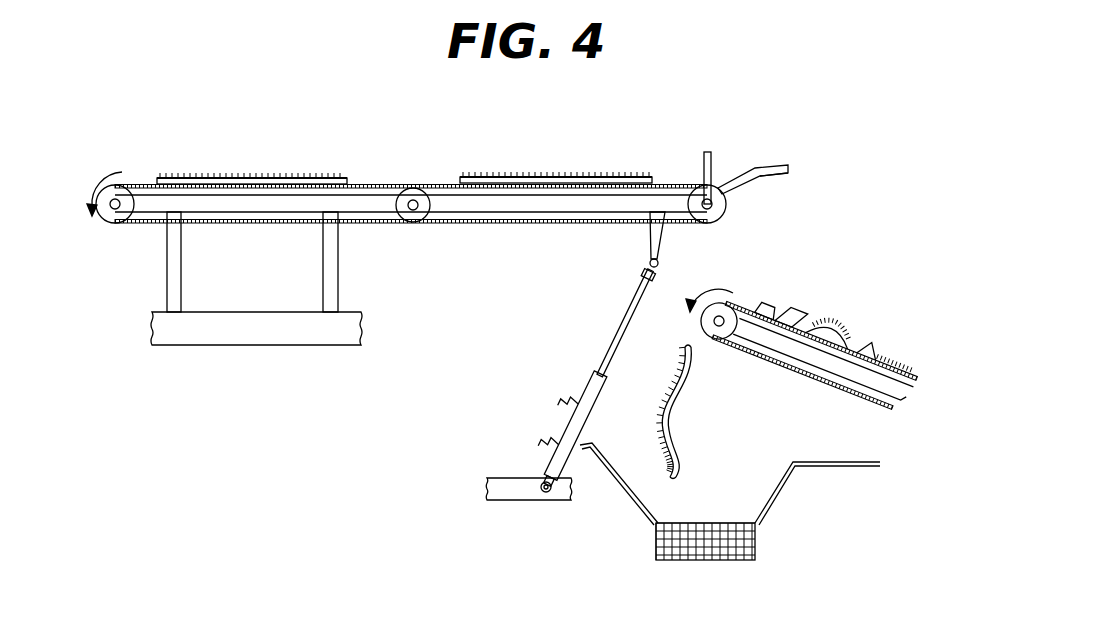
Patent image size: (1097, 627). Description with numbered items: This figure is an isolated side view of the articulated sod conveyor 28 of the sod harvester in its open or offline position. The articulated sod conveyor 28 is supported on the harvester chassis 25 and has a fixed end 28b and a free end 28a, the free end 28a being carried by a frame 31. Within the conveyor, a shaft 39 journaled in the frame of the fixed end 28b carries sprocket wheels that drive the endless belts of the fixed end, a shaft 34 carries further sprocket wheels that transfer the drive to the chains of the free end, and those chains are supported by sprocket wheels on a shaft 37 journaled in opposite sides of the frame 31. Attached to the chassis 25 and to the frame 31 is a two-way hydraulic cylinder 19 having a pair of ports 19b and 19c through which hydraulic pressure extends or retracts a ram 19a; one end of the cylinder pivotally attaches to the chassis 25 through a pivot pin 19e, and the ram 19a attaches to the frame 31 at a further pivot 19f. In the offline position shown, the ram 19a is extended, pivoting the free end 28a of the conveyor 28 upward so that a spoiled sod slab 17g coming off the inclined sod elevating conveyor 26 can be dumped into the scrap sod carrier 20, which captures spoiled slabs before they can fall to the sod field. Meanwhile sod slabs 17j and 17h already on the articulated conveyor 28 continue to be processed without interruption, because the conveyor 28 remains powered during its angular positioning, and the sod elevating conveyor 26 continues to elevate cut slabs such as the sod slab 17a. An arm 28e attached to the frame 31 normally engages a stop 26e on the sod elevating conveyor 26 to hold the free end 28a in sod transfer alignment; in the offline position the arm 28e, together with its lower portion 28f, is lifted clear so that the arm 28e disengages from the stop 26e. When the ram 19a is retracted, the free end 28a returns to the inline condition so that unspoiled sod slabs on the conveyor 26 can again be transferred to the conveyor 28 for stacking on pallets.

The articulated sod conveyor 28 is at (481, 191).
The free end 28a is at (501, 172).
The fixed end 28b is at (217, 176).
The arm 28e is at (757, 168).
The chute lower plate 28f is at (790, 171).
The sod slab 17j is at (170, 180).
The sod slab 17h is at (476, 178).
The sod slab 17a is at (836, 322).
The spoiled sod slab 17g is at (688, 397).
The shaft 37 is at (711, 196).
The shaft 39 is at (116, 209).
The shaft 34 is at (409, 212).
The frame 31 is at (527, 205).
The chassis 25 is at (260, 333).
The two-way hydraulic cylinder 19 is at (589, 398).
The ram 19a is at (627, 318).
The port 19b is at (538, 445).
The port 19c is at (557, 405).
The pivot pin 19e is at (543, 492).
The upper pivot 19f is at (660, 262).
The scrap sod carrier 20 is at (646, 502).
The sod elevating conveyor 26 is at (825, 316).
The stop 26e is at (762, 303).